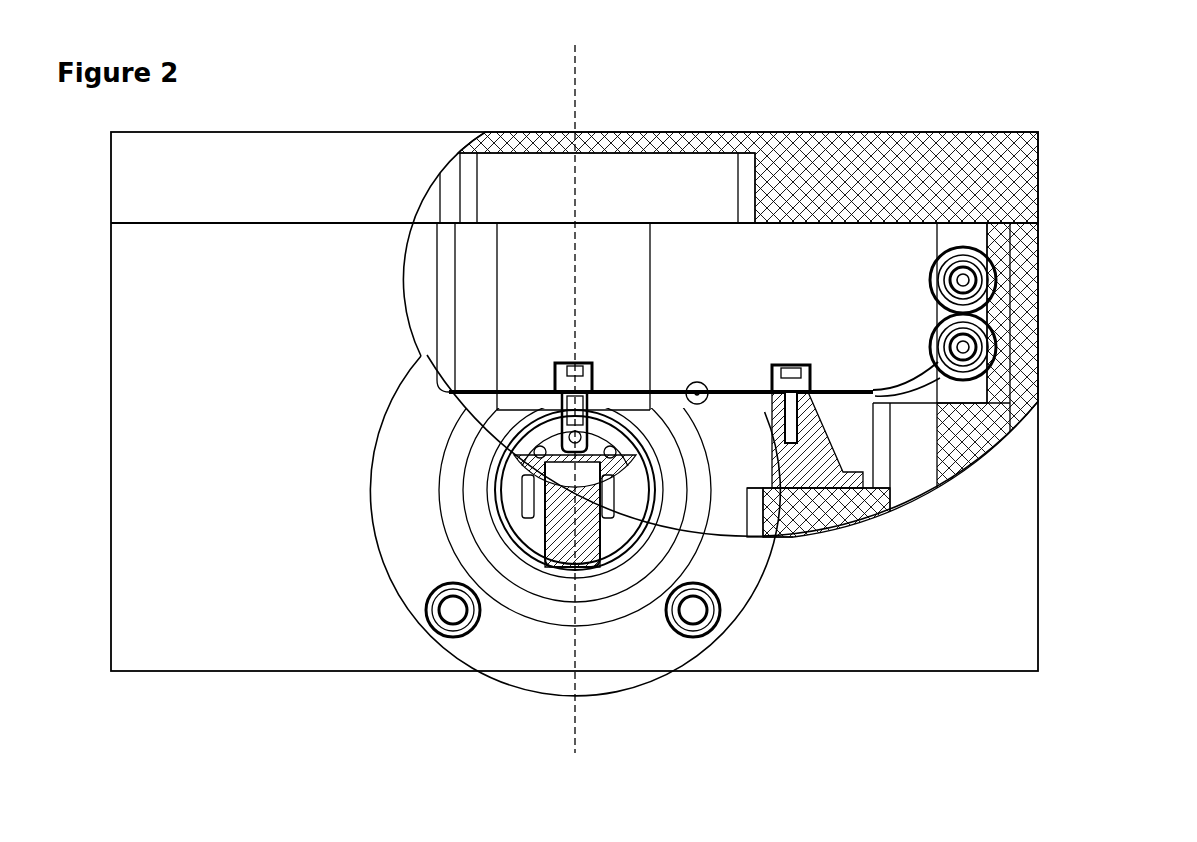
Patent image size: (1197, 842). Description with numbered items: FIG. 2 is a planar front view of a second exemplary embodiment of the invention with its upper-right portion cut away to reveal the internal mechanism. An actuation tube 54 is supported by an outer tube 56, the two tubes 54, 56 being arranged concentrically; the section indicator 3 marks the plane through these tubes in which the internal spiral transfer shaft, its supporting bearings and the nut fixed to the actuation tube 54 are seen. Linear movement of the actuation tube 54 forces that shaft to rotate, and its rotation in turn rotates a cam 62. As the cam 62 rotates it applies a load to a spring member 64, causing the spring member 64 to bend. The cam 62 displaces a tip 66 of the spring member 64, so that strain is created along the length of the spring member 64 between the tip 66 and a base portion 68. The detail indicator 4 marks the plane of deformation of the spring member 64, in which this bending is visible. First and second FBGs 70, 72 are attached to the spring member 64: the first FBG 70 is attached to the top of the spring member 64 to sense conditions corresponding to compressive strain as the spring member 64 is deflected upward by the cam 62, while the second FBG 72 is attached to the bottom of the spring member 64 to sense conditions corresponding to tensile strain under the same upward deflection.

The actuation tube 54 is at (532, 580).
The outer tube 56 is at (622, 608).
The cam 62 is at (618, 502).
The spring member 64 is at (663, 388).
The tip 66 is at (597, 347).
The base portion 68 is at (811, 352).
The first FBG 70 is at (702, 388).
The second FBG 72 is at (683, 400).
The detail view indicator 4 is at (693, 376).
The section line 3 is at (575, 47).